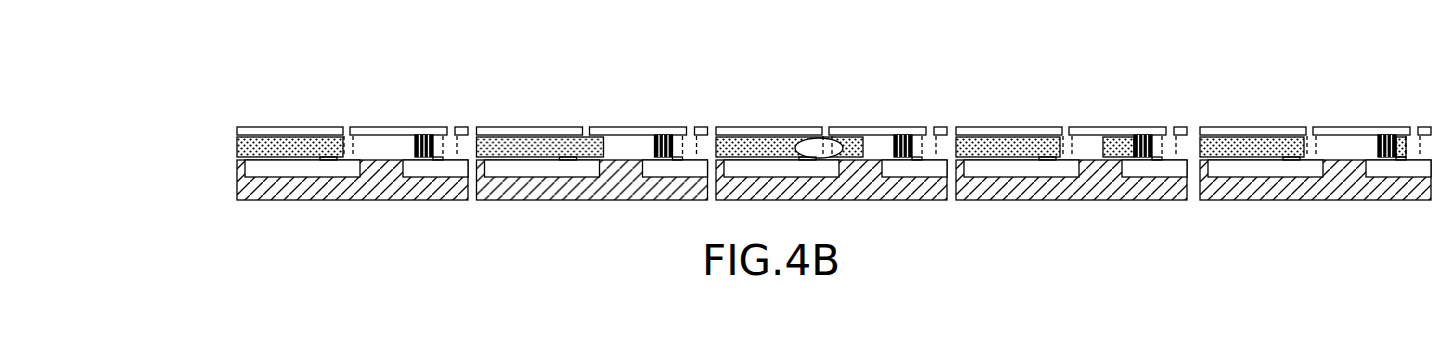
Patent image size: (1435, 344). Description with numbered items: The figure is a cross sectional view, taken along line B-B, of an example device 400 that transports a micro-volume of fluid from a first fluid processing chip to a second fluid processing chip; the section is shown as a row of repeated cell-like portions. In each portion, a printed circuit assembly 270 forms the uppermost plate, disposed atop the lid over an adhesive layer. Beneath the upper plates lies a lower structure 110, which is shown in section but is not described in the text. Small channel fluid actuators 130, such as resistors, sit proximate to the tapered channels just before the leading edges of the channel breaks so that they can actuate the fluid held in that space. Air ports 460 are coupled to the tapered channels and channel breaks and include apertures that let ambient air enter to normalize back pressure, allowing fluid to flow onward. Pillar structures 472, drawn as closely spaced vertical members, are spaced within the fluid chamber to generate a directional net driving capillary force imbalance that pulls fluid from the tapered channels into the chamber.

The device 400 is at (176, 46).
The printed circuit assembly 270 is at (260, 114).
The air ports 460 is at (383, 108).
The pillar structures 472 is at (456, 126).
The substrate 110 is at (323, 180).
The channel fluid actuators 130 is at (344, 210).